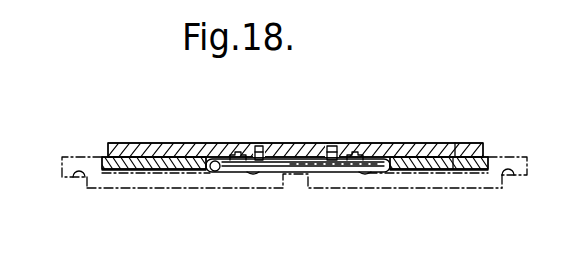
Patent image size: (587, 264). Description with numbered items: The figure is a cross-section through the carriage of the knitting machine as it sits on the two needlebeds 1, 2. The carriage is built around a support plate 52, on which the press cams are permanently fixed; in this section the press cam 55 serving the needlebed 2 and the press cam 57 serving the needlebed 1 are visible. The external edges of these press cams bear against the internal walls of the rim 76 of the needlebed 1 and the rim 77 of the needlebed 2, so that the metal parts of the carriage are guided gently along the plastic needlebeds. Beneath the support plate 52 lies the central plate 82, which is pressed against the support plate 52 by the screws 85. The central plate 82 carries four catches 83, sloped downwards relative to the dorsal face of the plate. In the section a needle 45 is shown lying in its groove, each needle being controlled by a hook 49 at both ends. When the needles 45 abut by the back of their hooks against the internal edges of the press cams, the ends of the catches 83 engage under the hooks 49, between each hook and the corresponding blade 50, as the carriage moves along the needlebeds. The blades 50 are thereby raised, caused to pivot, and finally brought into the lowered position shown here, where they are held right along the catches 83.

The needlebed 1 is at (472, 192).
The needlebed 2 is at (190, 190).
The needle 45 is at (312, 172).
The hook 49 is at (212, 160).
The blade 50 is at (254, 173).
The support plate 52 is at (113, 148).
The press cam 55 is at (456, 148).
The press cam 57 is at (143, 165).
The rim 76 is at (528, 160).
The rim 77 is at (62, 165).
The central plate 82 is at (284, 172).
The catch 83 is at (232, 171).
The screw 85 is at (259, 147).